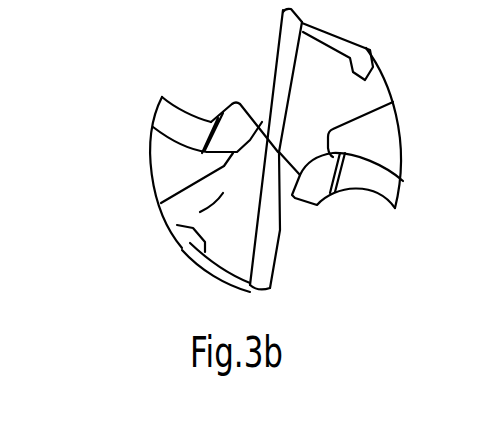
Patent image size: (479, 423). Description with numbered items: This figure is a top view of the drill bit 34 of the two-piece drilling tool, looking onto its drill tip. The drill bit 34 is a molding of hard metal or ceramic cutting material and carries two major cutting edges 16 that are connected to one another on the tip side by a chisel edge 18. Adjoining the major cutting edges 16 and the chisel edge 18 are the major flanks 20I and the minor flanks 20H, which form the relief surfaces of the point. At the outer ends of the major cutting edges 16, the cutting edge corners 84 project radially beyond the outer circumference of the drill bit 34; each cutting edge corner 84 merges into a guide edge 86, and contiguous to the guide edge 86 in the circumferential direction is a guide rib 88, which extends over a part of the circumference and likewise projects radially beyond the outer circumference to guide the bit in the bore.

The major cutting edge 16 is at (275, 50).
The chisel edge 18 is at (262, 115).
The cutting edge corner 84 is at (290, 9).
The drill bit 34 is at (350, 100).
The minor flank 20H is at (180, 226).
The major flank 20I is at (277, 265).
The guide rib 88 is at (195, 273).
The guide edge 86 is at (247, 302).